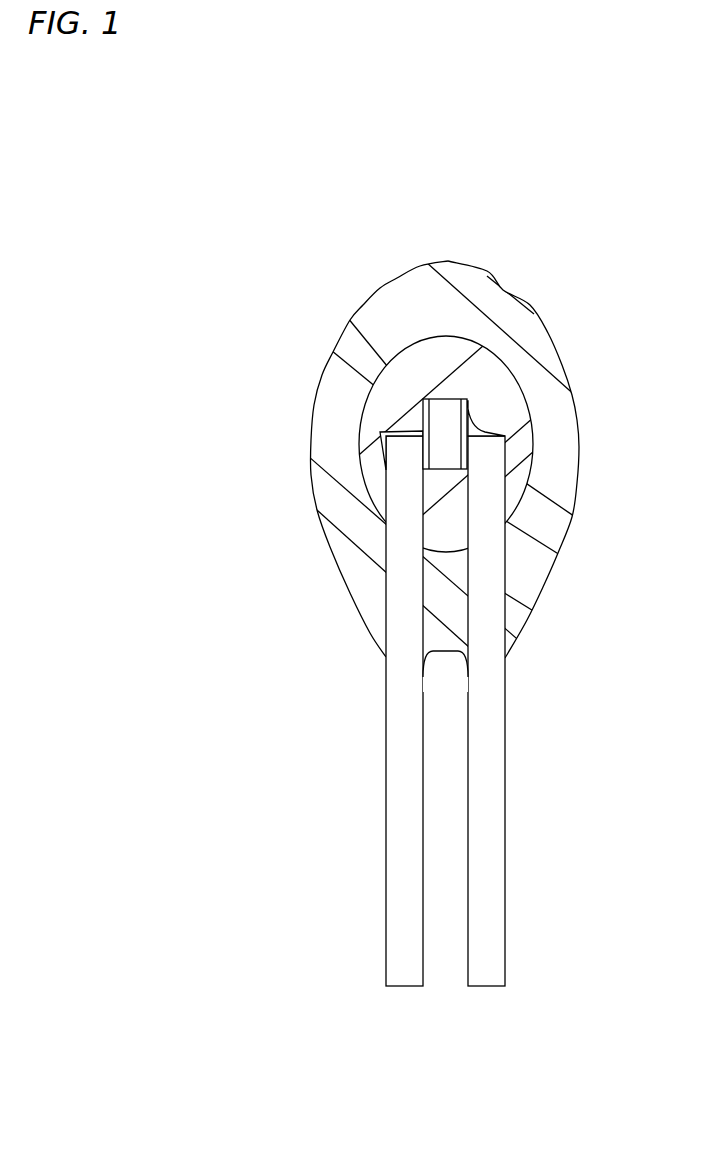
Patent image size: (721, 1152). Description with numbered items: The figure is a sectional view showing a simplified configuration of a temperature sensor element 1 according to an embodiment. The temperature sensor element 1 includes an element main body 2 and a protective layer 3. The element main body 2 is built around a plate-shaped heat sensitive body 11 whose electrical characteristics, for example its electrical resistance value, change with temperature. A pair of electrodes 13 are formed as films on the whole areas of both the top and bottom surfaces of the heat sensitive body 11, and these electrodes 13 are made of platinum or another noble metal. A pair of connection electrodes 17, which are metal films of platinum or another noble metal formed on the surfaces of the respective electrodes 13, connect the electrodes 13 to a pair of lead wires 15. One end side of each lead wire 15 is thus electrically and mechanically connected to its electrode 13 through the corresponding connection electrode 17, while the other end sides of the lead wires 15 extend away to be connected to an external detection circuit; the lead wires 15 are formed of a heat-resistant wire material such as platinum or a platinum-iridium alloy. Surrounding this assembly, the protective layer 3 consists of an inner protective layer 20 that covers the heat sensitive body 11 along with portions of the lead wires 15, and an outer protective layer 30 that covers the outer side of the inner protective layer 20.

The temperature sensor element 1 is at (541, 268).
The element main body 2 is at (506, 676).
The protective layer 3 is at (262, 290).
The heat sensitive body 11 is at (446, 398).
The electrode 13 is at (410, 428).
The lead wire 15 is at (386, 804).
The connection electrode 17 is at (362, 458).
The inner protective layer 20 is at (362, 400).
The outer protective layer 30 is at (350, 320).